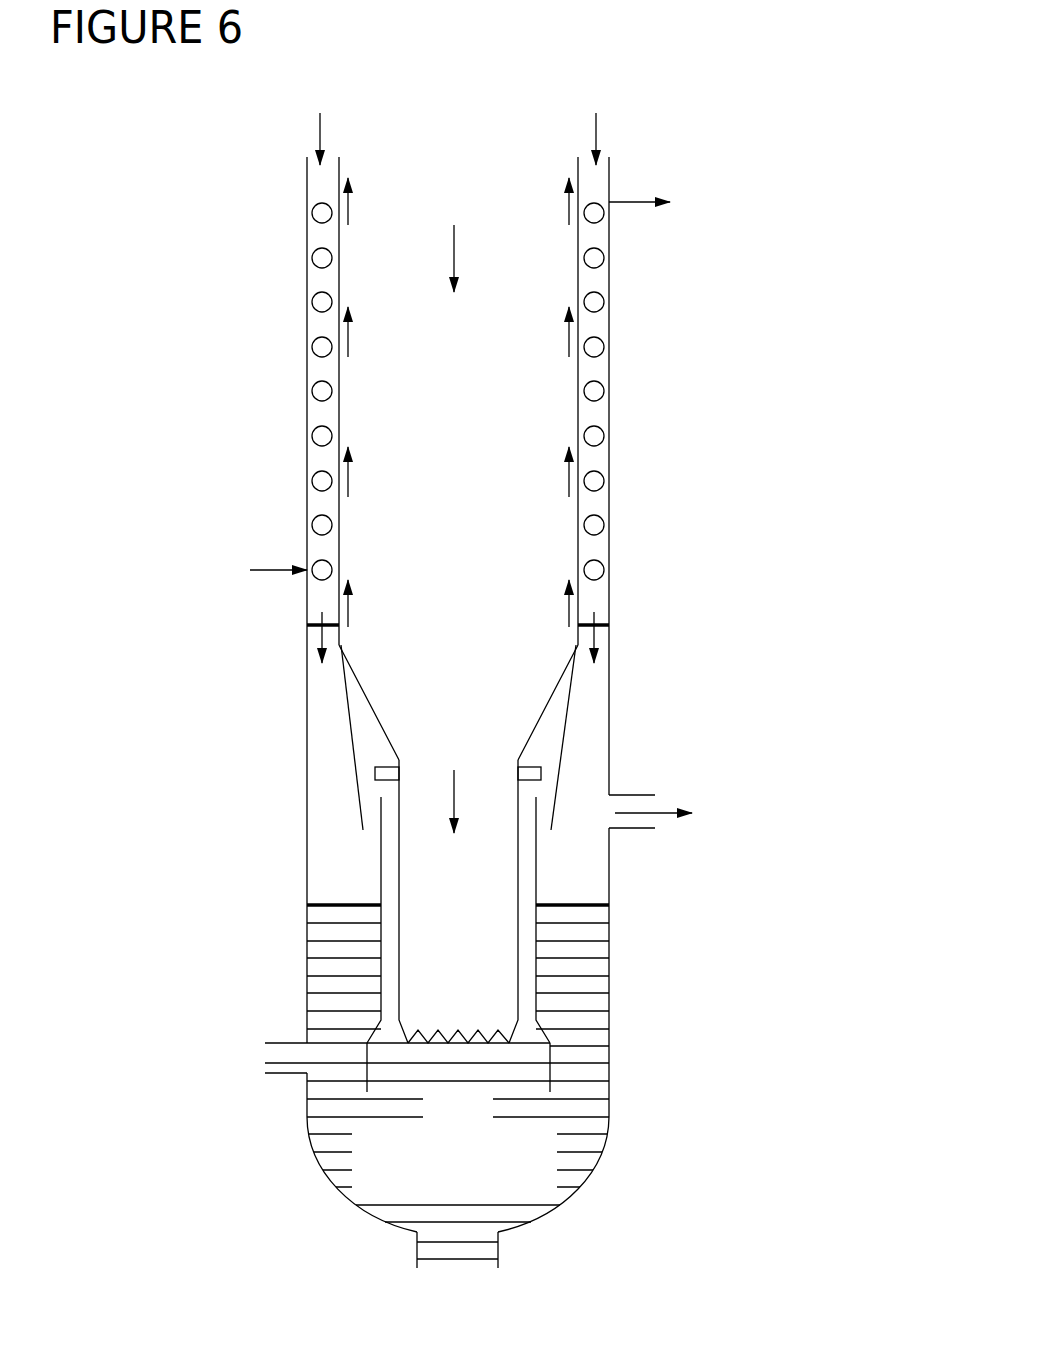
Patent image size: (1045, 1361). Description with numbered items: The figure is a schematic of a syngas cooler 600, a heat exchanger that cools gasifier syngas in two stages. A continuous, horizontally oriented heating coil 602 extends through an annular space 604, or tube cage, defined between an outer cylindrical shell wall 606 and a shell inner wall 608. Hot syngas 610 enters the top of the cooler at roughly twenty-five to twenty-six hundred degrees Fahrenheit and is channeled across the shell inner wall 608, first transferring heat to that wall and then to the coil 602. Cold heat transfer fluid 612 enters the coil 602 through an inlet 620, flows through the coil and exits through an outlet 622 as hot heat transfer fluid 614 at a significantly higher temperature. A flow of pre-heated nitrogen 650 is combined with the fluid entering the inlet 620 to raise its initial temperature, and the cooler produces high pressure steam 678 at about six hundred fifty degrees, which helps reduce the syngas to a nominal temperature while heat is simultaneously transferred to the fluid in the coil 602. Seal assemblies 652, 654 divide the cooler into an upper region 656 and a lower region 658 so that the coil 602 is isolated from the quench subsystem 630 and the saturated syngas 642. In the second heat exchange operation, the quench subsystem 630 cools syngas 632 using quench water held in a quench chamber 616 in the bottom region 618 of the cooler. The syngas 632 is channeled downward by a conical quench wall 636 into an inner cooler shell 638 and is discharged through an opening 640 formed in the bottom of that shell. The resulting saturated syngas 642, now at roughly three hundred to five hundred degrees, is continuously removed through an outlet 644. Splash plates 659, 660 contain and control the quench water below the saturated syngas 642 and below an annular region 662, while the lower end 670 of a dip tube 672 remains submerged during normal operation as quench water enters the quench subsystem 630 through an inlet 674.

The syngas cooler 600 is at (236, 882).
The heating coil 602 is at (320, 262).
The annular space 604 is at (599, 280).
The outer cylindrical shell wall 606 is at (610, 1058).
The shell inner wall 608 is at (578, 378).
The hot syngas 610 is at (452, 162).
The cold heat transfer fluid 612 is at (272, 570).
The hot heat transfer fluid 614 is at (637, 202).
The quench chamber 616 is at (480, 1114).
The bottom region 618 is at (304, 953).
The inlet 620 is at (321, 580).
The outlet 622 is at (609, 202).
The quench subsystem 630 is at (356, 831).
The syngas 632 is at (448, 703).
The conical quench wall 636 is at (554, 690).
The inner cooler shell 638 is at (524, 887).
The opening 640 is at (428, 1028).
The saturated syngas 642 is at (786, 790).
The outlet 644 is at (451, 1252).
The pre-heated nitrogen 650 is at (320, 128).
The seal assembly 652 is at (605, 625).
The seal assembly 654 is at (312, 628).
The upper region 656 is at (300, 361).
The lower region 658 is at (620, 1035).
The splash plate 659 is at (350, 735).
The splash plate 660 is at (566, 725).
The annular region 662 is at (583, 760).
The lower end 670 is at (550, 1070).
The dip tube 672 is at (540, 965).
The inlet 674 is at (280, 1053).
The high pressure steam 678 is at (418, 580).